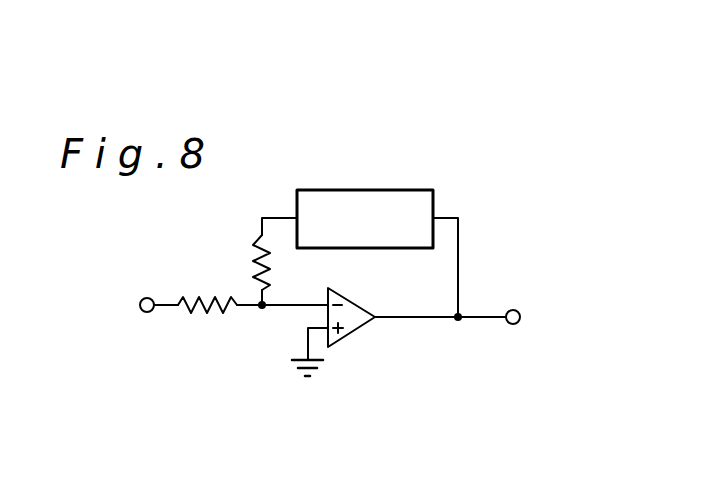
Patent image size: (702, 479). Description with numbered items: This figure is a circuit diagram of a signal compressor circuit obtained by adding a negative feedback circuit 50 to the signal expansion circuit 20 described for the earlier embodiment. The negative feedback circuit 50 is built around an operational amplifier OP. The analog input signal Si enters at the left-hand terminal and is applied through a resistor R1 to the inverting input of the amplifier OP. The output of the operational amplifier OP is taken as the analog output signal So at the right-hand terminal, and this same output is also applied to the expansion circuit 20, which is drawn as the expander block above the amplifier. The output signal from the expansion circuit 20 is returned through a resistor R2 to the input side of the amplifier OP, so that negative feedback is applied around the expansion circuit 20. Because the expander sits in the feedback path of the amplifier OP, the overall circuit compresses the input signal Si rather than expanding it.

The signal expansion circuit 20 is at (357, 190).
The negative feedback circuit 50 is at (240, 328).
The resistor R1 is at (253, 290).
The resistor R2 is at (254, 261).
The operational amplifier OP is at (362, 305).
The analog input signal Si is at (142, 304).
The analog output signal So is at (533, 320).